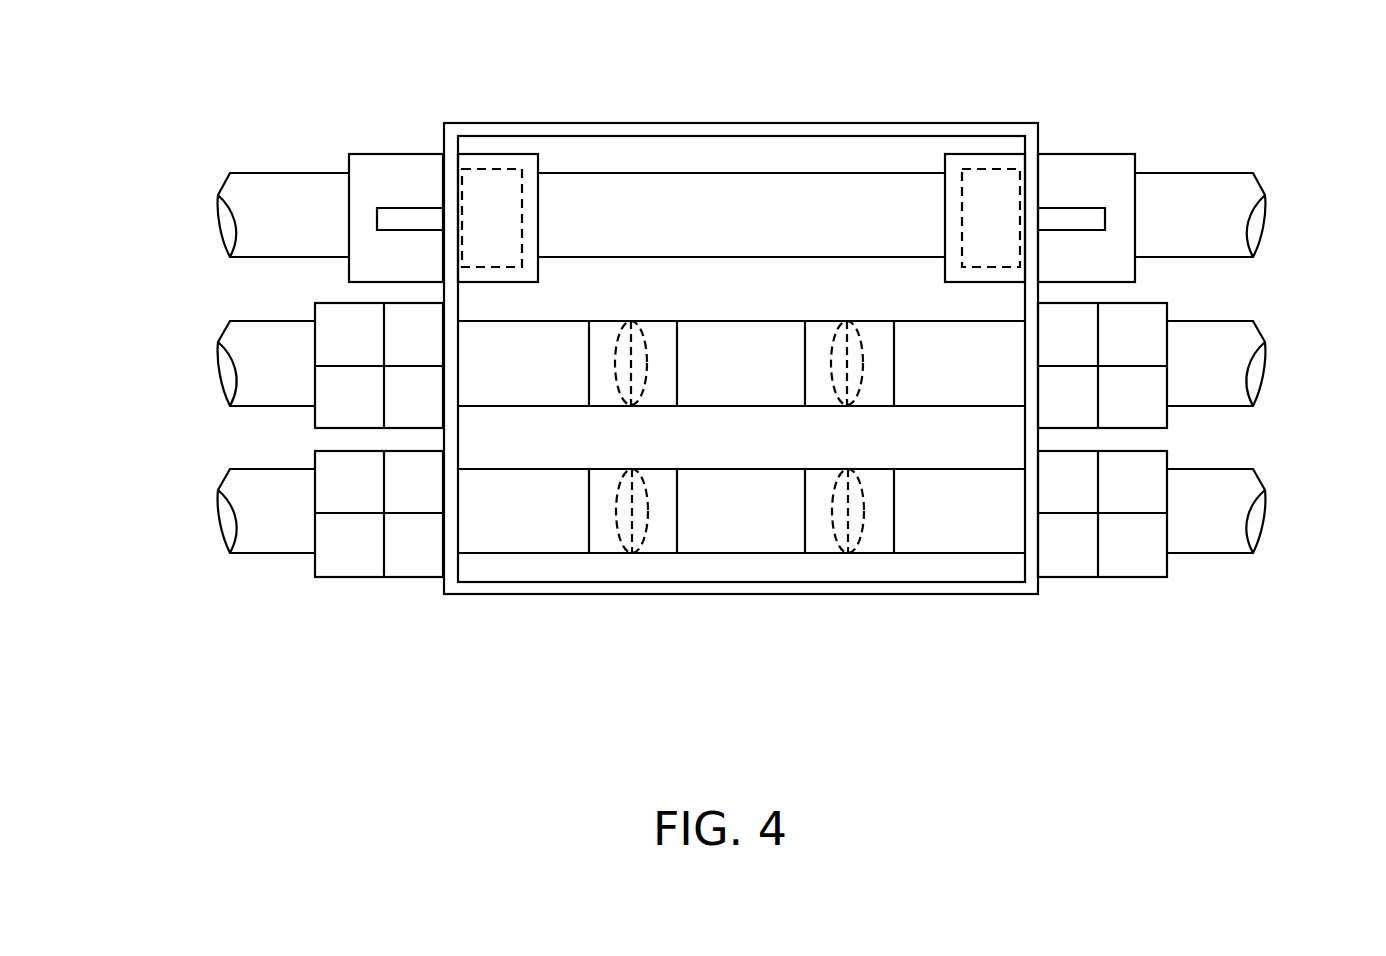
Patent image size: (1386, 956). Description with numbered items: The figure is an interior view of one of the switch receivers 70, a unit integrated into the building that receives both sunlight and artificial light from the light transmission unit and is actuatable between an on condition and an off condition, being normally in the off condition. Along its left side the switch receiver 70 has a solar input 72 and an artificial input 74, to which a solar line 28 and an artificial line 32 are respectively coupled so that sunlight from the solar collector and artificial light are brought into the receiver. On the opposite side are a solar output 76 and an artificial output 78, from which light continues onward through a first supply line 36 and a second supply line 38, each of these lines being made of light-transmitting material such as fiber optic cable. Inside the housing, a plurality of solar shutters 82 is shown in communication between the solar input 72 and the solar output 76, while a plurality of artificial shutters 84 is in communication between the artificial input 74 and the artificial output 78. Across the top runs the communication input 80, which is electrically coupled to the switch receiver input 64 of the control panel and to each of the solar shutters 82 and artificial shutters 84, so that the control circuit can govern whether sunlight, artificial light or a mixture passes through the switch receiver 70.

The solar line 28 is at (263, 553).
The artificial line 32 is at (255, 406).
The first supply line 36 is at (1220, 552).
The second supply line 38 is at (1220, 405).
The switch receiver input 64 is at (265, 173).
The switch receiver 70 is at (582, 594).
The solar input 72 is at (365, 578).
The artificial input 74 is at (315, 303).
The solar output 76 is at (1118, 577).
The artificial output 78 is at (1167, 304).
The communication input 80 is at (393, 157).
The solar shutter 82 is at (832, 517).
The artificial shutter 84 is at (837, 332).